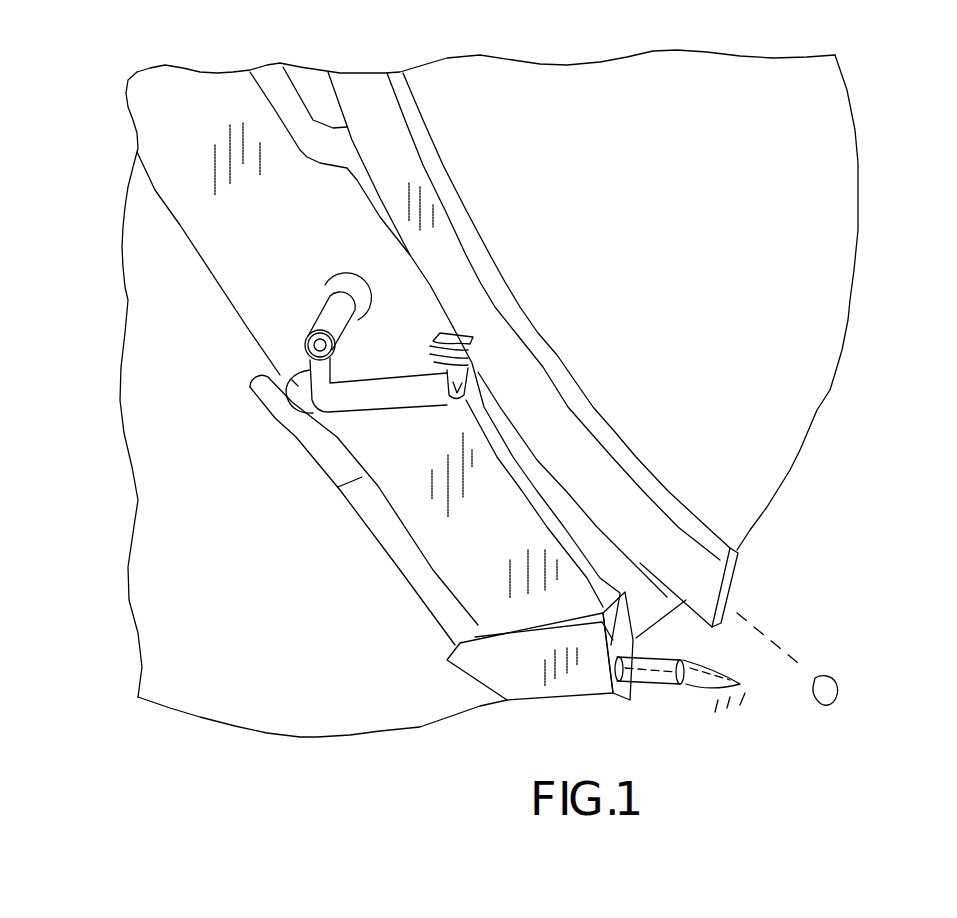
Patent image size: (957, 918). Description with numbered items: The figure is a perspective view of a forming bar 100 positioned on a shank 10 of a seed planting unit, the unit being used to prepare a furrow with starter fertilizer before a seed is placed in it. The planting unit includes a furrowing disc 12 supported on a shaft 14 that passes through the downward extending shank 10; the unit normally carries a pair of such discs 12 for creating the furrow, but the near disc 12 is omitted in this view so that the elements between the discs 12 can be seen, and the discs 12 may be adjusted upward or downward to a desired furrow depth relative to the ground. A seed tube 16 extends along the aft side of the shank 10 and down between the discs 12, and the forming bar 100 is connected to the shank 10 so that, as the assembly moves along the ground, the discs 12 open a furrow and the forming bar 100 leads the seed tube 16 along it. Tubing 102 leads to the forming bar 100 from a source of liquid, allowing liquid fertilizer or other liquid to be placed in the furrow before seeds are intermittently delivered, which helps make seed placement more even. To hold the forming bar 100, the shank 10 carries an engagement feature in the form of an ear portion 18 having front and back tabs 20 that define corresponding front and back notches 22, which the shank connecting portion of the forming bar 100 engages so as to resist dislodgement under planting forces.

The shank 10 is at (248, 307).
The furrowing disc 12 is at (870, 322).
The shaft 14 is at (317, 328).
The seed tube 16 is at (510, 228).
The ear portion 18 is at (393, 365).
The front and back tabs 20 is at (470, 372).
The front and back notches 22 is at (462, 332).
The forming bar 100 is at (544, 463).
The tubing 102 is at (336, 465).